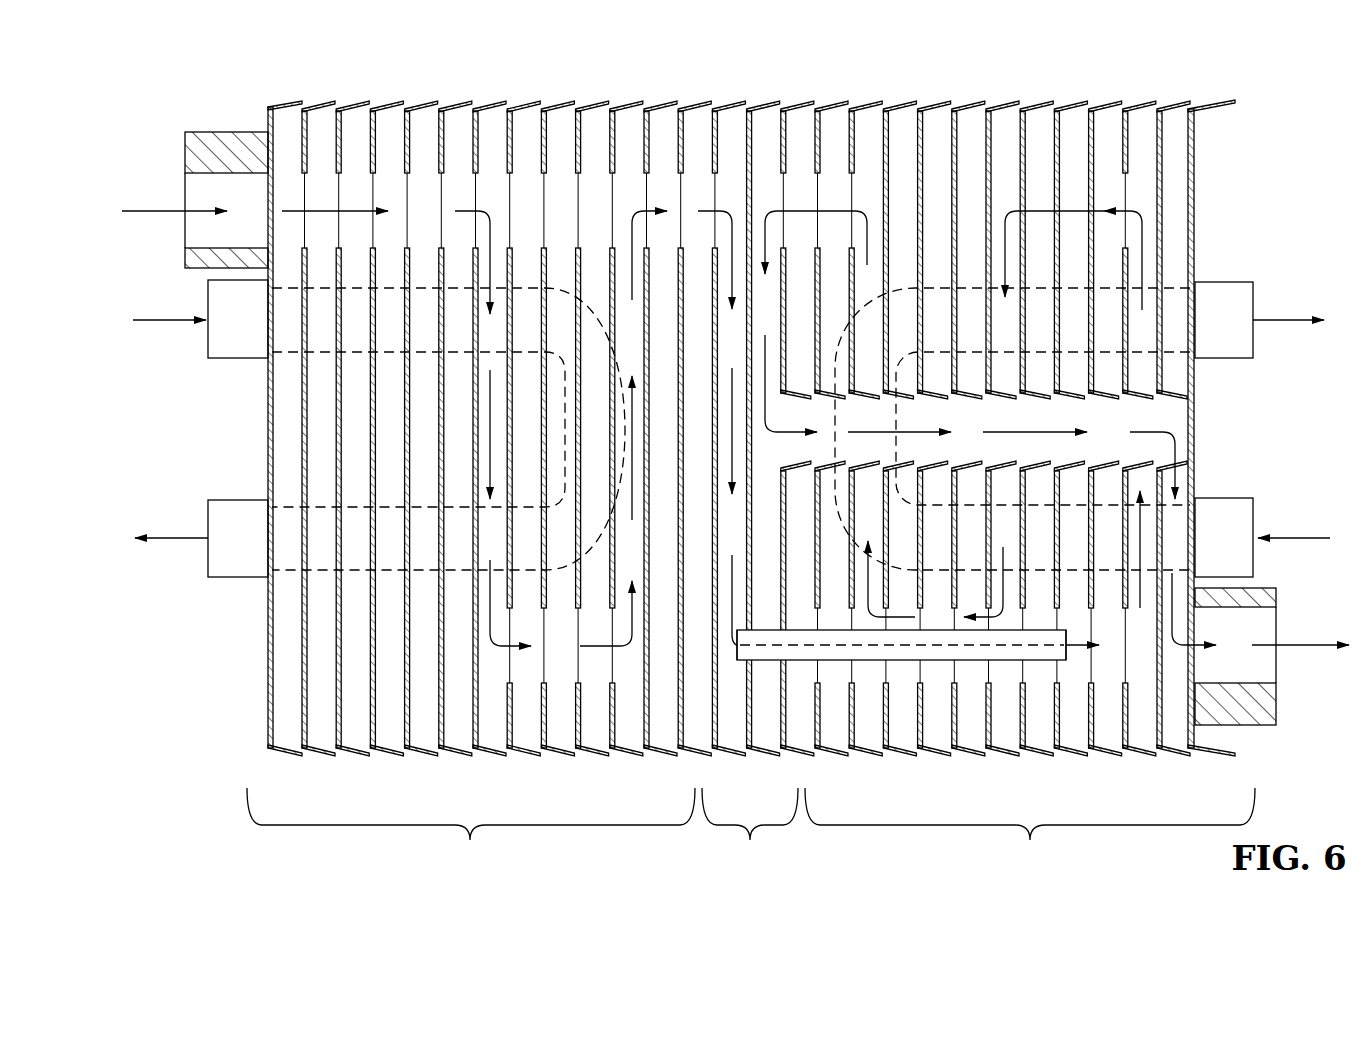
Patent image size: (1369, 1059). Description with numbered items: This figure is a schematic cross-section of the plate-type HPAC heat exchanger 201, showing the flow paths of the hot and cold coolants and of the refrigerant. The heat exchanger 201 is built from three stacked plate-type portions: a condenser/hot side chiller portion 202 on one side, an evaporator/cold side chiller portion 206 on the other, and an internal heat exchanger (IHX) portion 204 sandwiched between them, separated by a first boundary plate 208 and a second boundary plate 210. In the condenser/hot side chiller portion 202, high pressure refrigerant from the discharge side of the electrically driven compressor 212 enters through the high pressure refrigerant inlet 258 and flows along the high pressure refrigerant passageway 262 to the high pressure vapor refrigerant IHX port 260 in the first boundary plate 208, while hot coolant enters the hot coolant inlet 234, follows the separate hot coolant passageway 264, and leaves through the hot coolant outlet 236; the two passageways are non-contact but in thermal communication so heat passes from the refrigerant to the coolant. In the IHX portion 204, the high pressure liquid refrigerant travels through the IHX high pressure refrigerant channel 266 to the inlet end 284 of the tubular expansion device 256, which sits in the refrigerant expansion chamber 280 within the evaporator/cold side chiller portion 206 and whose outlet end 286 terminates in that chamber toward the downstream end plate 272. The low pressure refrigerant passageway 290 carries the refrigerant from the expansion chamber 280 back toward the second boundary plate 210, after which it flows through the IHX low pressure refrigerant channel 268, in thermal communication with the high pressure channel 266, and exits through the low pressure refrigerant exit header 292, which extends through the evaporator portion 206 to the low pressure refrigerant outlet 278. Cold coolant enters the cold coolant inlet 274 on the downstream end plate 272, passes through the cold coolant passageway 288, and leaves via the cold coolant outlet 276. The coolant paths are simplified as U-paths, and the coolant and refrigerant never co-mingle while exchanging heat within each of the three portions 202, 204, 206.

The plate-type HPAC heat exchanger 201 is at (1278, 117).
The condenser/hot side chiller portion 202 is at (471, 829).
The internal heat exchanger (IHX) portion 204 is at (750, 829).
The evaporator/cold side chiller portion 206 is at (1030, 829).
The first boundary plate 208 is at (713, 133).
The second boundary plate 210 is at (790, 140).
The electrically driven compressor 212 is at (268, 693).
The hot coolant inlet 234 is at (200, 340).
The hot coolant outlet 236 is at (195, 523).
The tubular expansion device 256 is at (976, 655).
The high pressure refrigerant inlet 258 is at (183, 187).
The high pressure vapor refrigerant IHX port 260 is at (715, 183).
The high pressure refrigerant passageway 262 is at (470, 205).
The hot coolant passageway 264 is at (560, 275).
The IHX high pressure refrigerant channel 266 is at (728, 347).
The IHX low pressure refrigerant channel 268 is at (755, 140).
The downstream end plate 272 is at (1195, 207).
The cold coolant inlet 274 is at (1273, 556).
The cold coolant outlet 276 is at (1272, 305).
The low pressure refrigerant outlet 278 is at (1293, 678).
The refrigerant expansion chamber 280 is at (1120, 662).
The expansion device inlet end 284 is at (740, 647).
The expansion device outlet end 286 is at (1066, 655).
The cold coolant passageway 288 is at (1137, 315).
The low pressure refrigerant passageway 290 is at (1137, 150).
The low pressure refrigerant exit header 292 is at (1128, 420).